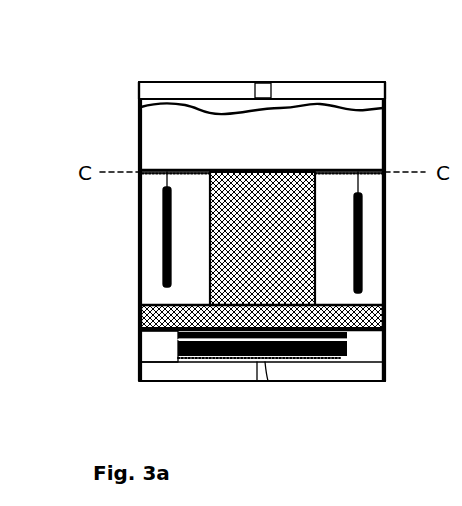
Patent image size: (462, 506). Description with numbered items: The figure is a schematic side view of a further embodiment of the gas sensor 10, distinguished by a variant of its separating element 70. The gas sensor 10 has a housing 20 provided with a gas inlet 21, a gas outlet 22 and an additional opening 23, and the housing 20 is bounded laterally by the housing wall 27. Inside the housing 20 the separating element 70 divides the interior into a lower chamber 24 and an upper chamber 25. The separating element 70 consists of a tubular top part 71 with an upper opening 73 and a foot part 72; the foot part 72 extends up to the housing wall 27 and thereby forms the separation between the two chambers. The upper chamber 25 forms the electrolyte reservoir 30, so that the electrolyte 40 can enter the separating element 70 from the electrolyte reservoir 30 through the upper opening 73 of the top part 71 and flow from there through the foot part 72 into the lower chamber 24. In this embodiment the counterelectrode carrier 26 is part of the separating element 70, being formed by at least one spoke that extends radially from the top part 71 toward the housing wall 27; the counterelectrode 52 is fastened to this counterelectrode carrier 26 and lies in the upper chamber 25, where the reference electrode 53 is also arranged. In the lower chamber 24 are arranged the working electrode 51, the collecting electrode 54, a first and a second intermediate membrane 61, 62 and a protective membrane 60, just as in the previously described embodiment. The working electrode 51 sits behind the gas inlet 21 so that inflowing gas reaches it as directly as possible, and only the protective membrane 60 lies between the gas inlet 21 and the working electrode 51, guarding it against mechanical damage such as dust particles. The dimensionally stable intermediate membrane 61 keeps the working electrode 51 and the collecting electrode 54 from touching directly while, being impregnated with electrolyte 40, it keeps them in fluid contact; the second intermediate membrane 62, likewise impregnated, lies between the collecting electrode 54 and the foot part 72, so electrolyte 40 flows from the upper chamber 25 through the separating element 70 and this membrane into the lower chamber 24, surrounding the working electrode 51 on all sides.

The gas sensor 10 is at (80, 92).
The housing 20 is at (139, 118).
The gas inlet 21 is at (257, 381).
The gas outlet 22 is at (267, 82).
The additional opening 23 is at (140, 138).
The lower chamber 24 is at (165, 350).
The upper chamber 25 is at (155, 276).
The counterelectrode carrier 26 is at (176, 170).
The housing wall 27 is at (385, 280).
The electrolyte reservoir 30 is at (150, 245).
The electrolyte 40 is at (313, 133).
The working electrode 51 is at (347, 351).
The counterelectrode 52 is at (165, 212).
The reference electrode 53 is at (317, 237).
The collecting electrode 54 is at (347, 338).
The protective membrane 60 is at (268, 381).
The intermediate membrane 61 is at (347, 345).
The second intermediate membrane 62 is at (347, 332).
The separating element 70 is at (208, 238).
The top part 71 is at (362, 227).
The foot part 72 is at (385, 313).
The upper opening 73 is at (262, 166).